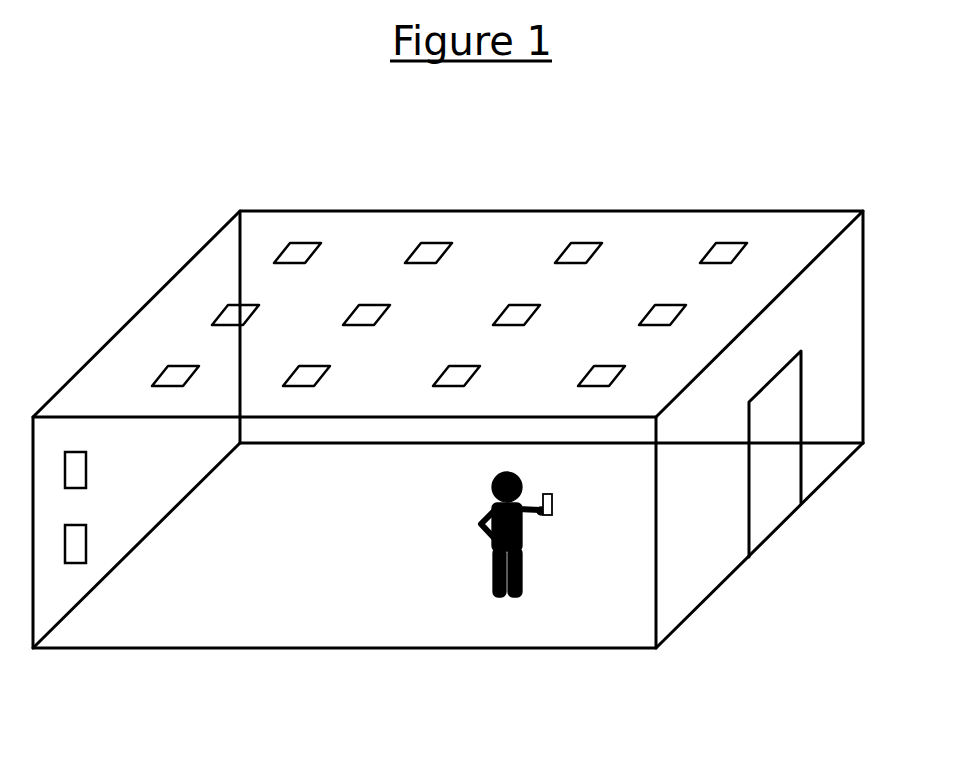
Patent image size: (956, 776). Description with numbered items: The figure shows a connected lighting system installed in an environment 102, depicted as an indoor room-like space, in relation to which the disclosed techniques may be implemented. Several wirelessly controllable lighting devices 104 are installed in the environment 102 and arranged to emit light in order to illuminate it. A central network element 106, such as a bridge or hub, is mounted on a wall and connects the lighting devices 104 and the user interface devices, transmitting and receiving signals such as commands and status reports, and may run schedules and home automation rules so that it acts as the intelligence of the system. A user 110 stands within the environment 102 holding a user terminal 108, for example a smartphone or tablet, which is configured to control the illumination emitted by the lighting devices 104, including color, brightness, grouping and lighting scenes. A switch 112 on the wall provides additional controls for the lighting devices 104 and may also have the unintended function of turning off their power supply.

The environment 102 is at (702, 210).
The lighting device 104 is at (595, 248).
The central network element 106 is at (86, 462).
The user terminal 108 is at (552, 503).
The user 110 is at (495, 553).
The switch 112 is at (86, 535).